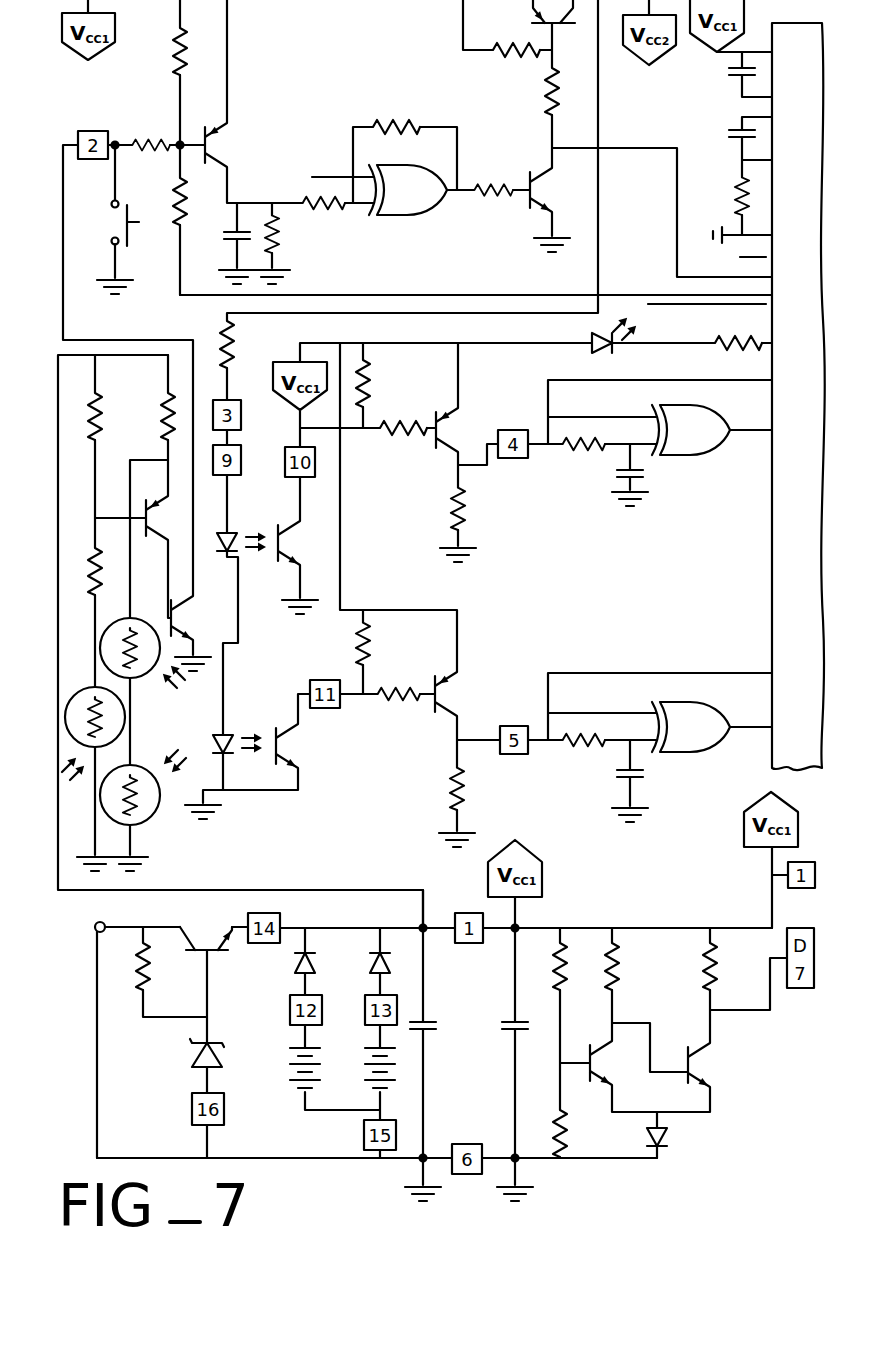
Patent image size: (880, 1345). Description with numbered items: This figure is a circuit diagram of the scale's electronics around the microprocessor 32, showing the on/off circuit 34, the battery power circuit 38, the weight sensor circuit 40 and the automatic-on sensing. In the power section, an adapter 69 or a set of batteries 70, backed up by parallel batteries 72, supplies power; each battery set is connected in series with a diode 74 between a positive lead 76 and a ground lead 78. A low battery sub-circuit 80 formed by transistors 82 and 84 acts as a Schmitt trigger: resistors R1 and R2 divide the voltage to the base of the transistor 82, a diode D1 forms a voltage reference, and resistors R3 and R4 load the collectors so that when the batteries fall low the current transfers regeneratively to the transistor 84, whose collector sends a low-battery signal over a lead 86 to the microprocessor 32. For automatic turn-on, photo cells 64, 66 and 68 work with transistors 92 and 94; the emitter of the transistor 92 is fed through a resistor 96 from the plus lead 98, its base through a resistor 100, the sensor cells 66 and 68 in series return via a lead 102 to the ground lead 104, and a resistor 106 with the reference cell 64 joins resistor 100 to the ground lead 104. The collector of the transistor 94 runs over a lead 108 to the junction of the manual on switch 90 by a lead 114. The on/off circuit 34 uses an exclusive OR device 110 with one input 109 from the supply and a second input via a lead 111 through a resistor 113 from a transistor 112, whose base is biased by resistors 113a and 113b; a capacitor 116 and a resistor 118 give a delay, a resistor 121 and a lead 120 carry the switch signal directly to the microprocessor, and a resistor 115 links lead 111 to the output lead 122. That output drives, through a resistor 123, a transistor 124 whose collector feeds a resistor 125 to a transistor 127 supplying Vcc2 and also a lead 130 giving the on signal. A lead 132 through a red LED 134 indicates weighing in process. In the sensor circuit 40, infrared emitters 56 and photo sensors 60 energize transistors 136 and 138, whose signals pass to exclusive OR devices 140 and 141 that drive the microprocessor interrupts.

The microprocessor 32 is at (772, 552).
The on/off circuit 34 is at (392, 76).
The battery power circuit 38 is at (360, 940).
The weight sensor circuit 40 is at (543, 607).
The infrared emitter 56 is at (248, 707).
The photo sensor 60 is at (320, 749).
The reference photo cell 64 is at (82, 690).
The photo cell 66 is at (156, 615).
The photo cell 68 is at (161, 800).
The adapter 69 is at (143, 1040).
The batteries 70 is at (290, 1065).
The backup batteries 72 is at (370, 1068).
The diode 74 is at (373, 960).
The positive lead 76 is at (327, 926).
The ground lead 78 is at (302, 1133).
The low battery sub-circuit 80 is at (684, 908).
The transistor 82 is at (597, 1067).
The transistor 84 is at (698, 1069).
The lead 86 is at (750, 1010).
The manual on switch 90 is at (113, 231).
The transistor 92 is at (148, 516).
The transistor 94 is at (180, 622).
The resistor 96 is at (162, 413).
The plus lead 98 is at (253, 862).
The resistor 100 is at (100, 422).
The lead 102 is at (133, 842).
The ground lead 104 is at (405, 1200).
The resistor 106 is at (93, 596).
The lead 108 is at (203, 564).
The input 109 is at (370, 167).
The exclusive OR device 110 is at (420, 201).
The lead 111 is at (358, 205).
The transistor 112 is at (214, 150).
The resistor 113 is at (310, 177).
The resistor 113a is at (148, 133).
The resistor 113b is at (161, 63).
The lead 114 is at (118, 170).
The resistor 115 is at (400, 120).
The capacitor 116 is at (233, 238).
The resistor 118 is at (291, 250).
The lead 120 is at (196, 297).
The resistor 121 is at (178, 225).
The output lead 122 is at (450, 200).
The resistor 123 is at (485, 182).
The transistor 124 is at (540, 190).
The resistor 125 is at (542, 100).
The transistor 127 is at (555, 28).
The lead 130 is at (676, 232).
The lead 132 is at (497, 343).
The red LED 134 is at (592, 343).
The transistor 136 is at (447, 697).
The transistor 138 is at (447, 430).
The exclusive OR device 140 is at (705, 441).
The exclusive OR circuit 141 is at (705, 738).
The resistor R1 is at (557, 982).
The resistor R2 is at (553, 1112).
The resistor R3 is at (620, 980).
The resistor R4 is at (717, 978).
The diode D1 is at (668, 1137).